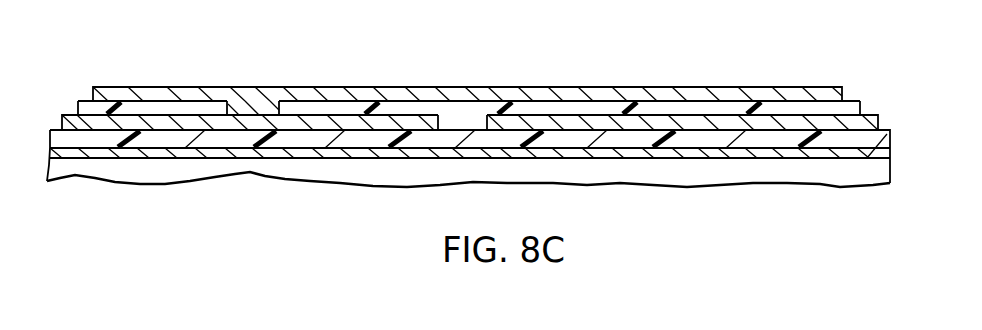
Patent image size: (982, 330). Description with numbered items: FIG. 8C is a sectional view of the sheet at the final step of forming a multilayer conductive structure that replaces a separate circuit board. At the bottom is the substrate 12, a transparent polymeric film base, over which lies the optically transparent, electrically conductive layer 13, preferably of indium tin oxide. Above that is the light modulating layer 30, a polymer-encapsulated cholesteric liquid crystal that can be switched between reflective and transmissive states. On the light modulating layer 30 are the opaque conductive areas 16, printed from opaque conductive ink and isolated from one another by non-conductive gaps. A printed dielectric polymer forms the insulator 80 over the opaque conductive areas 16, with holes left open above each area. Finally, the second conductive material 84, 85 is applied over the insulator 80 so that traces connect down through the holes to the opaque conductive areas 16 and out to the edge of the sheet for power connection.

The substrate 12 is at (132, 172).
The transparent electrically conductive layer 13 is at (787, 155).
The opaque conductive areas 16 is at (542, 127).
The light modulating layer 30 is at (700, 143).
The insulator 80 is at (465, 120).
The second conductive material 84 is at (262, 105).
The top conductive layer 85 is at (469, 101).